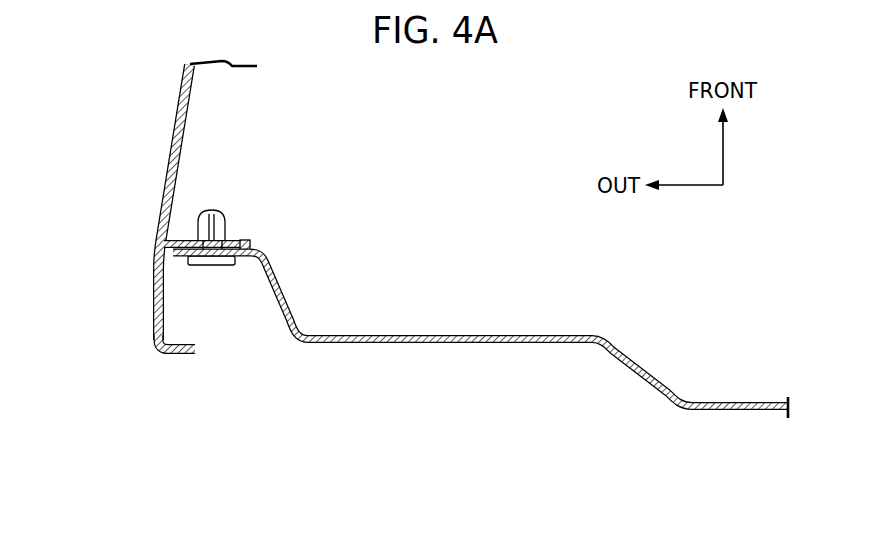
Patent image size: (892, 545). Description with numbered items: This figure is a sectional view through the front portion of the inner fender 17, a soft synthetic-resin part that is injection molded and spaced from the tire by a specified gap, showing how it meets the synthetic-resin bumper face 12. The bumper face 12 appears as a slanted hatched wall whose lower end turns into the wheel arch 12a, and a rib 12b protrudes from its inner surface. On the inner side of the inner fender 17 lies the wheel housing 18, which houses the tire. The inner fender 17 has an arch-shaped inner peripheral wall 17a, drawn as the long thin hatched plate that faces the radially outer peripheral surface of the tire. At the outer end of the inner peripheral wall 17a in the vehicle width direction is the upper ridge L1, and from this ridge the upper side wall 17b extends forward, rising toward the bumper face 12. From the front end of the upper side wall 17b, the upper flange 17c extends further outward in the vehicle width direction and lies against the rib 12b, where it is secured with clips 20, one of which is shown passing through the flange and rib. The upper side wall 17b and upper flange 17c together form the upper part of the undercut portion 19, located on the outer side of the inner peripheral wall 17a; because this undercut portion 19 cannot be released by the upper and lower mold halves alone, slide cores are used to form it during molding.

The bumper face 12 is at (173, 246).
The wheel arch 12a is at (180, 356).
The rib 12b is at (246, 240).
The inner fender 17 is at (480, 379).
The inner peripheral wall 17a is at (505, 345).
The upper side wall 17b is at (279, 284).
The upper flange 17c is at (250, 258).
The wheel housing 18 is at (437, 387).
The undercut portion 19 is at (294, 245).
The clips 20 is at (205, 268).
The upper ridge L1 is at (295, 341).